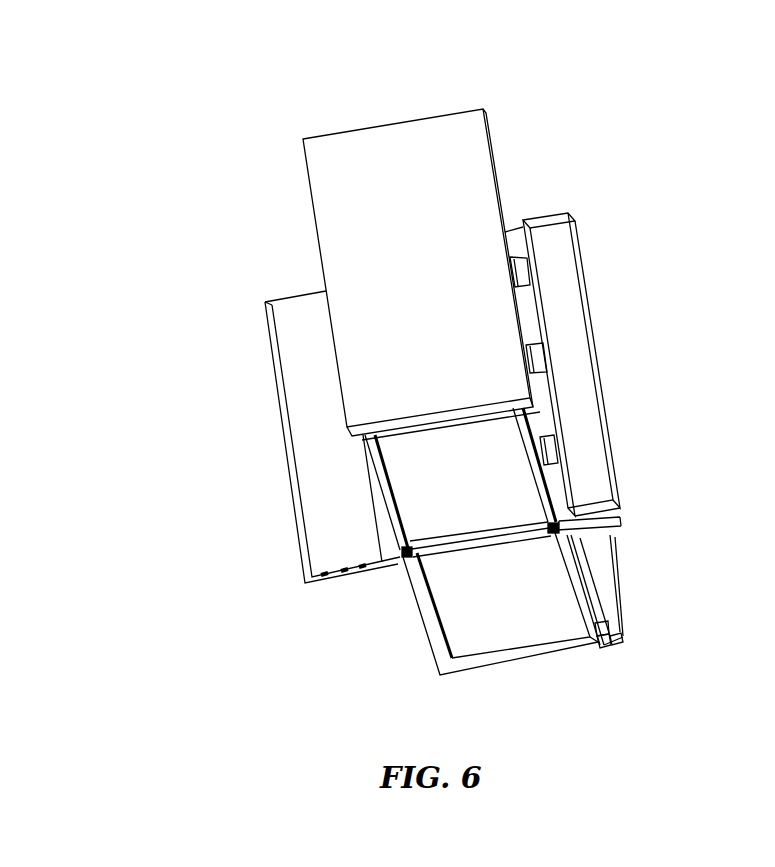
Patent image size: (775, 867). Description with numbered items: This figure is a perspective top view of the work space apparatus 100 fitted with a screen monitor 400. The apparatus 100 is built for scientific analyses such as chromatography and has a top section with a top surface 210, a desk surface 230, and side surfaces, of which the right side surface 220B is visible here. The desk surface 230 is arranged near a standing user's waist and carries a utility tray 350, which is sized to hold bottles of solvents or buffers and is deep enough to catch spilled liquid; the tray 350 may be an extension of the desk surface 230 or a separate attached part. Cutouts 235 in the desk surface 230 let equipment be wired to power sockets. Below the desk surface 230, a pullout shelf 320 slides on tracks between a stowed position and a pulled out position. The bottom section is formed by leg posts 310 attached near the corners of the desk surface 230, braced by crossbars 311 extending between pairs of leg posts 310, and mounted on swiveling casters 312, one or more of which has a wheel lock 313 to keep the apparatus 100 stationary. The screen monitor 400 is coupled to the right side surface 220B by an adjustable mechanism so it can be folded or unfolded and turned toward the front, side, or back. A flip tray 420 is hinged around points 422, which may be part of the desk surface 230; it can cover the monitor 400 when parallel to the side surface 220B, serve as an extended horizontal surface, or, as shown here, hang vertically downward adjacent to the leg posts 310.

The work space apparatus 100 is at (97, 31).
The top surface 210 is at (440, 130).
The utility tray 350 is at (583, 245).
The cutouts 235 is at (543, 358).
The pullout shelf 320 is at (281, 408).
The screen monitor 400 is at (466, 458).
The right side surface 220B is at (500, 484).
The desk surface 230 is at (622, 527).
The hinge points 422 is at (404, 558).
The leg posts 310 is at (618, 604).
The crossbars 311 is at (607, 640).
The swiveling casters 312 is at (626, 641).
The wheel lock 313 is at (615, 652).
The flip tray 420 is at (458, 615).